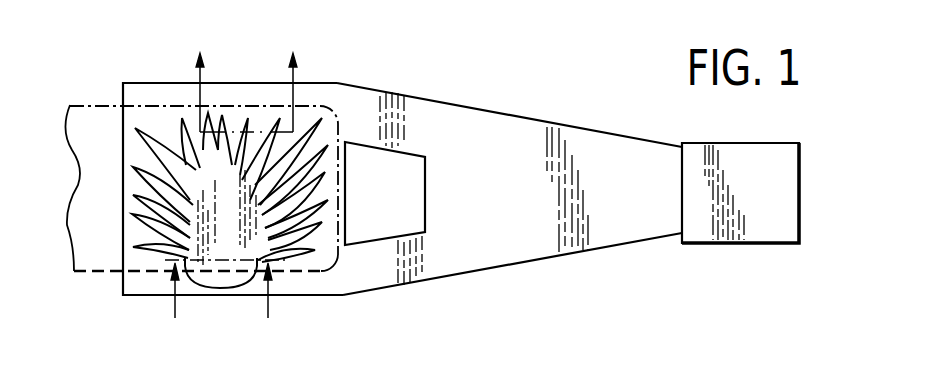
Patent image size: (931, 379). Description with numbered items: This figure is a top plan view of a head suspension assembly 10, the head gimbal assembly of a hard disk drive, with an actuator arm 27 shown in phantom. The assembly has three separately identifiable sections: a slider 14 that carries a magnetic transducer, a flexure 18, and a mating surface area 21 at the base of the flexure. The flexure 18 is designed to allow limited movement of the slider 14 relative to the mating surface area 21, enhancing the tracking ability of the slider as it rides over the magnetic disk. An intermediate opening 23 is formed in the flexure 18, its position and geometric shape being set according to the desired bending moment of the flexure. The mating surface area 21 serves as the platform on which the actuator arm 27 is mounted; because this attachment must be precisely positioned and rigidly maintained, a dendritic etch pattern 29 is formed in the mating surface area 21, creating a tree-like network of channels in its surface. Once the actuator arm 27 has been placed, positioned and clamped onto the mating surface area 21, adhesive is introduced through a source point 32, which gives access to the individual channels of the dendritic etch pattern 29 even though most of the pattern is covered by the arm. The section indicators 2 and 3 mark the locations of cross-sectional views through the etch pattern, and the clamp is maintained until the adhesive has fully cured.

The head suspension assembly 10 is at (455, 100).
The slider 14 is at (785, 202).
The flexure 18 is at (503, 250).
The mating surface area 21 is at (162, 92).
The intermediate opening 23 is at (400, 165).
The actuator arm 27 is at (87, 227).
The dendritic etch pattern 29 is at (285, 160).
The source point 32 is at (227, 281).
The section line 2 is at (222, 309).
The section line 3 is at (250, 73).